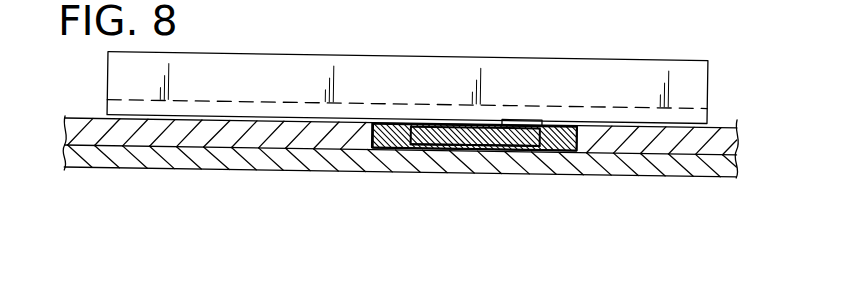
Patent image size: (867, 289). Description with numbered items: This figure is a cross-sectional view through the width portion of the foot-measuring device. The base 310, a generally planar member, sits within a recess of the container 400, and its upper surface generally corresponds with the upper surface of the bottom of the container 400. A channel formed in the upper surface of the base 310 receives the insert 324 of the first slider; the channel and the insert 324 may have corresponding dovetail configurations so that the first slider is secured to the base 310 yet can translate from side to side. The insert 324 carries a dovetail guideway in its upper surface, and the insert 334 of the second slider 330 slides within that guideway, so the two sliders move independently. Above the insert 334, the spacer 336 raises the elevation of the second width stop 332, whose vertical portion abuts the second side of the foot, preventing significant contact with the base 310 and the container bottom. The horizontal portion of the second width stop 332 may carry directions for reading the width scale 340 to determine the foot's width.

The base 310 is at (578, 151).
The insert 324 is at (455, 142).
The second slider 330 is at (640, 58).
The second width stop 332 is at (107, 83).
The insert 334 is at (525, 141).
The spacer 336 is at (517, 121).
The width scale 340 is at (433, 125).
The container 400 is at (672, 175).